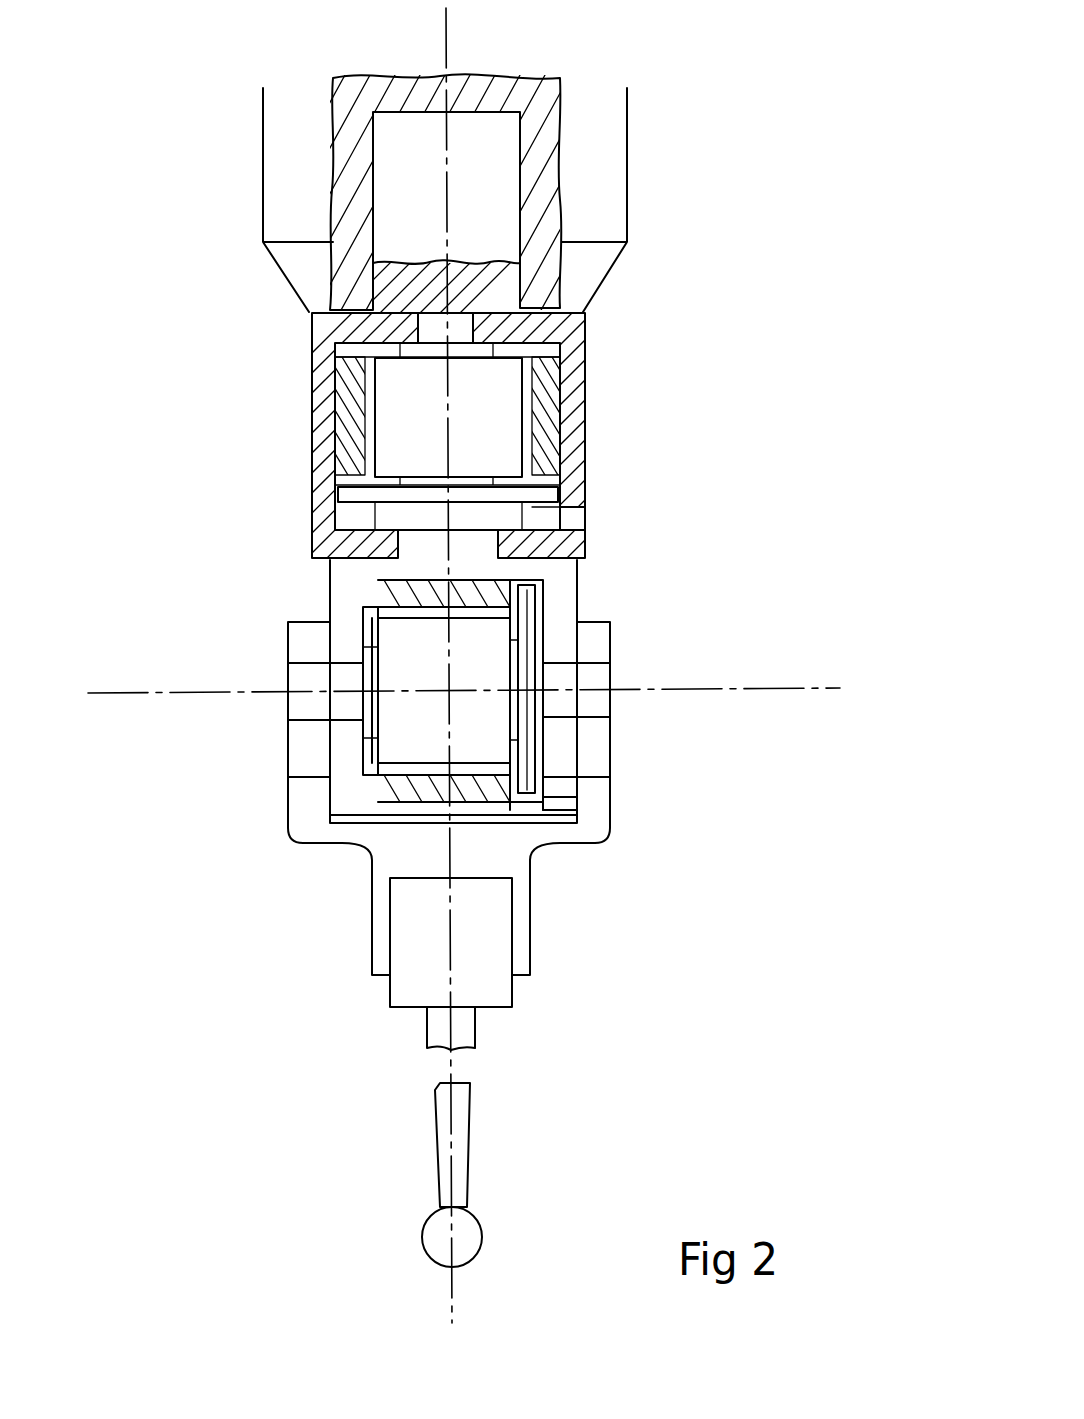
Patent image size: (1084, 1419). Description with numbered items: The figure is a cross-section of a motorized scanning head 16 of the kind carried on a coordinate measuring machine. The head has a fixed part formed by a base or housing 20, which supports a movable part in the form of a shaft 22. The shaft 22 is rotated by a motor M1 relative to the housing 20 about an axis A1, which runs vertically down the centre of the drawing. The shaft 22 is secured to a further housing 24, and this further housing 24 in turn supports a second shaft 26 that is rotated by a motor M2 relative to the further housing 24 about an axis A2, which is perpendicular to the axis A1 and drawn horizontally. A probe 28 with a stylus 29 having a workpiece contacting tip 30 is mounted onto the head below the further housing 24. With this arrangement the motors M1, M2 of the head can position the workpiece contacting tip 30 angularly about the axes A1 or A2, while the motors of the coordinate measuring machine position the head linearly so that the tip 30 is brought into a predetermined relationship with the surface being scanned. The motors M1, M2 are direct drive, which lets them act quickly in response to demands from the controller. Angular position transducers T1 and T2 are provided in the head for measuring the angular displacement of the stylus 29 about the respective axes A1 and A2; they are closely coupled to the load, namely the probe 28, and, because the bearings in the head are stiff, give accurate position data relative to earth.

The motorized scanning head 16 is at (745, 357).
The housing 20 is at (310, 425).
The motor M1 is at (498, 413).
The angular position transducer T1 is at (337, 493).
The shaft 22 is at (422, 543).
The further housing 24 is at (577, 585).
The shaft 26 is at (563, 718).
The motor M2 is at (408, 738).
The angular position transducer T2 is at (527, 787).
The probe 28 is at (512, 927).
The stylus 29 is at (470, 1147).
The workpiece contacting tip 30 is at (422, 1237).
The axis A1 is at (497, 680).
The axis A2 is at (502, 714).